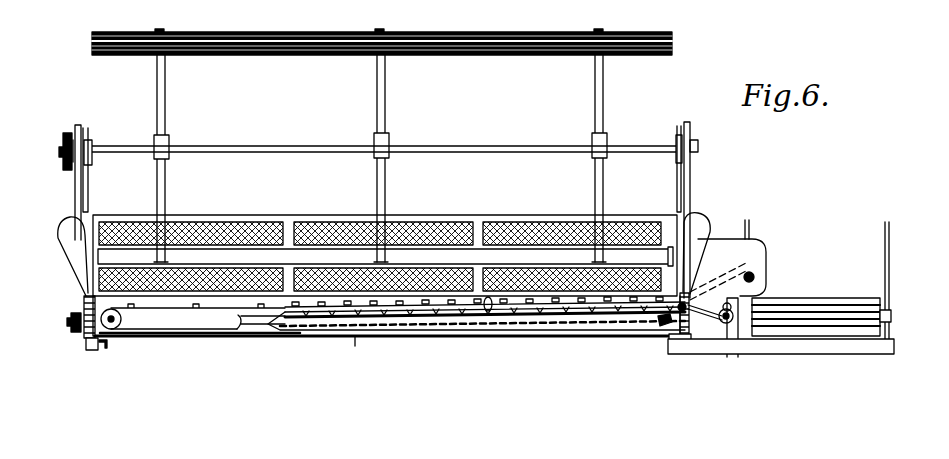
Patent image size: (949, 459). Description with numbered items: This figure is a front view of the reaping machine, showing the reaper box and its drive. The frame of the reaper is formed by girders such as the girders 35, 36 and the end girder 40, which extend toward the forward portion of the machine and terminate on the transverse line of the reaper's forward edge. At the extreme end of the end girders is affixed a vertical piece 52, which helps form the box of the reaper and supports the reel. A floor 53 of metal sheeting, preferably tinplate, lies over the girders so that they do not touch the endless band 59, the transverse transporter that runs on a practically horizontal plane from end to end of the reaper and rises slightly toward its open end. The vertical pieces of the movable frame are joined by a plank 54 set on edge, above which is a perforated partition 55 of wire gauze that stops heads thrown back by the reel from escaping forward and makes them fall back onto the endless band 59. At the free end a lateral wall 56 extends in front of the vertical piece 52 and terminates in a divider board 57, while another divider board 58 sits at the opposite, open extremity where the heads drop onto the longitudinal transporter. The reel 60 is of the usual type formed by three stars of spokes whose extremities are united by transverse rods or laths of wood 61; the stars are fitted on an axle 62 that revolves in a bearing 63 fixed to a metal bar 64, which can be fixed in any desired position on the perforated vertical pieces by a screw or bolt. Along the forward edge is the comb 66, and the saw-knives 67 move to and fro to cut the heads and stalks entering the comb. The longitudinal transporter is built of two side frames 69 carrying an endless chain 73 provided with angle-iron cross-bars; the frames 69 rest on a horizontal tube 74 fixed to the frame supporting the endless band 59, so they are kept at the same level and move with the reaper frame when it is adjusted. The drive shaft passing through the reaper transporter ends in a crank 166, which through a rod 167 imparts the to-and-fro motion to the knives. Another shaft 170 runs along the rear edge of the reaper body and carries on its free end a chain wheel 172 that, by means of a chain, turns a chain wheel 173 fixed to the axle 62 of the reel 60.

The girder 35 is at (103, 346).
The girder 36 is at (357, 341).
The girder 40 is at (670, 340).
The vertical piece 52 is at (75, 193).
The floor 53 is at (170, 337).
The plank 54 is at (204, 305).
The partition 55 is at (258, 230).
The lateral wall 56 is at (84, 300).
The divider board 57 is at (60, 238).
The divider board 58 is at (700, 224).
The endless band 59 is at (246, 337).
The reel 60 is at (166, 78).
The rods or laths of wood 61 is at (672, 47).
The axle 62 is at (290, 145).
The bearing 63 is at (91, 144).
The metal bar 64 is at (90, 186).
The comb 66 is at (450, 326).
The saw-knives 67 is at (489, 311).
The side frames 69 is at (752, 243).
The endless chain 73 is at (826, 297).
The horizontal tube 74 is at (812, 352).
The crank 166 is at (722, 325).
The rod 167 is at (716, 318).
The shaft 170 is at (70, 322).
The chain wheel 172 is at (84, 333).
The chain wheel 173 is at (61, 140).